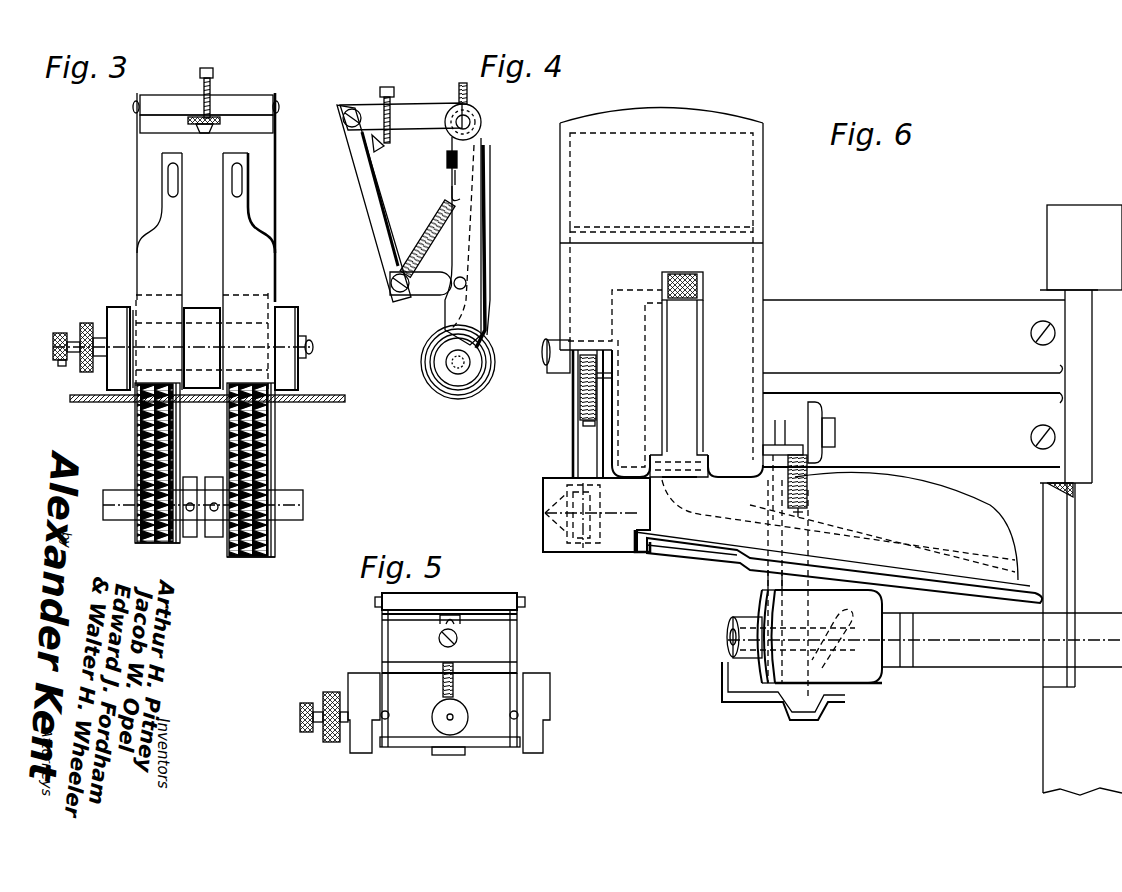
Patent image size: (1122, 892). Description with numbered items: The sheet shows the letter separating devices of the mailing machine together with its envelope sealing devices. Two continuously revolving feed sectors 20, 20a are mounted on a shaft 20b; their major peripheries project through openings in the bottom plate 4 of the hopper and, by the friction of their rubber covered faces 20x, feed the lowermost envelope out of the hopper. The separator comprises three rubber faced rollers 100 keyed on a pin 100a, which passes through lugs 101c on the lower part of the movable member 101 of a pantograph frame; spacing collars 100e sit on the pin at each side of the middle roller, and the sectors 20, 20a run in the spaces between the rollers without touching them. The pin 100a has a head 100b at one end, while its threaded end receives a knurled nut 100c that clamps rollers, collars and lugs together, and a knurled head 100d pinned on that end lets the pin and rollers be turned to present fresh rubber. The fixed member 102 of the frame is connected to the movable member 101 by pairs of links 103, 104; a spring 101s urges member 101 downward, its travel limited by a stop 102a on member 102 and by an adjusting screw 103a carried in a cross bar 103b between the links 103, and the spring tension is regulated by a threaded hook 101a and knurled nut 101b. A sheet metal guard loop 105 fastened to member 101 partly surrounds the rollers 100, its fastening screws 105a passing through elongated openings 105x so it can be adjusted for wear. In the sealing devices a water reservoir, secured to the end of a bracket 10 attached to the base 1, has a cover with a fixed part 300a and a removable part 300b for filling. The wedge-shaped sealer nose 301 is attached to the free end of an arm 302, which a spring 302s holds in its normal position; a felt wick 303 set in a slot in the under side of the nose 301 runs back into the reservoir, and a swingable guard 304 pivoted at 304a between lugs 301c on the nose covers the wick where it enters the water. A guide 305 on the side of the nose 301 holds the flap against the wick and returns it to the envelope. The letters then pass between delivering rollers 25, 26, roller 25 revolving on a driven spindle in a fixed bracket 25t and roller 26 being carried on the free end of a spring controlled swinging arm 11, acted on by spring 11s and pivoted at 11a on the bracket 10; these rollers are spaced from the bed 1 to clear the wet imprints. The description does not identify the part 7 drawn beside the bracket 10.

In FIG. 6, the base 1 is at (1050, 770).
In FIG. 3, the bottom plate 4 is at (328, 402).
In FIG. 6, the frame side plate 7 is at (1070, 552).
In FIG. 6, the bracket 10 is at (933, 310).
In FIG. 3, the swinging arm 11 is at (53, 347).
In FIG. 6, the swinging arm 11 is at (796, 720).
In FIG. 6, the pivot 11a is at (838, 437).
In FIG. 6, the spring 11s is at (808, 490).
In FIG. 3, the feed sector 20 is at (276, 436).
In FIG. 3, the feed sector 20a is at (135, 455).
In FIG. 3, the shaft 20b is at (284, 488).
In FIG. 3, the rubber covering 20x is at (225, 550).
In FIG. 6, the delivering roller 25 is at (866, 683).
In FIG. 6, the fixed bracket 25t is at (962, 668).
In FIG. 6, the delivering roller 26 is at (756, 605).
In FIG. 3, the rubber faced roller 100 is at (200, 308).
In FIG. 4, the rubber faced roller 100 is at (452, 400).
In FIG. 5, the rubber faced roller 100 is at (436, 758).
In FIG. 3, the pin 100a is at (280, 360).
In FIG. 3, the head 100b is at (314, 348).
In FIG. 3, the knurled nut 100c is at (80, 336).
In FIG. 3, the knurled head 100d is at (60, 362).
In FIG. 3, the spacing collar 100e is at (155, 300).
In FIG. 3, the movable member 101 is at (140, 205).
In FIG. 4, the movable member 101 is at (476, 223).
In FIG. 3, the threaded hook 101a is at (200, 96).
In FIG. 4, the threaded hook 101a is at (450, 190).
In FIG. 5, the threaded hook 101a is at (451, 725).
In FIG. 3, the knurled nut 101b is at (215, 122).
In FIG. 4, the knurled nut 101b is at (447, 158).
In FIG. 5, the knurled nut 101b is at (457, 714).
In FIG. 3, the lug 101c is at (140, 368).
In FIG. 4, the spring 101s is at (430, 238).
In FIG. 5, the spring 101s is at (443, 680).
In FIG. 4, the fixed member 102 is at (363, 180).
In FIG. 5, the fixed member 102 is at (485, 600).
In FIG. 4, the stop 102a is at (385, 147).
In FIG. 4, the link 103 is at (413, 115).
In FIG. 5, the link 103 is at (380, 665).
In FIG. 3, the adjusting screw 103a is at (213, 73).
In FIG. 4, the adjusting screw 103a is at (384, 86).
In FIG. 5, the adjusting screw 103a is at (458, 637).
In FIG. 3, the cross bar 103b is at (233, 106).
In FIG. 5, the cross bar 103b is at (398, 637).
In FIG. 4, the link 104 is at (432, 286).
In FIG. 3, the guard loop 105 is at (160, 232).
In FIG. 4, the guard loop 105 is at (490, 298).
In FIG. 3, the fastening screw 105a is at (168, 180).
In FIG. 3, the elongated opening 105x is at (233, 163).
In FIG. 6, the fixed cover part 300a is at (585, 300).
In FIG. 6, the removable cover part 300b is at (630, 160).
In FIG. 6, the sealer nose 301 is at (990, 520).
In FIG. 6, the lug 301c is at (697, 452).
In FIG. 6, the arm 302 is at (590, 450).
In FIG. 6, the spring 302s is at (580, 396).
In FIG. 6, the wick 303 is at (705, 285).
In FIG. 6, the swingable guard 304 is at (686, 356).
In FIG. 6, the pivot 304a is at (709, 459).
In FIG. 6, the guide 305 is at (690, 556).